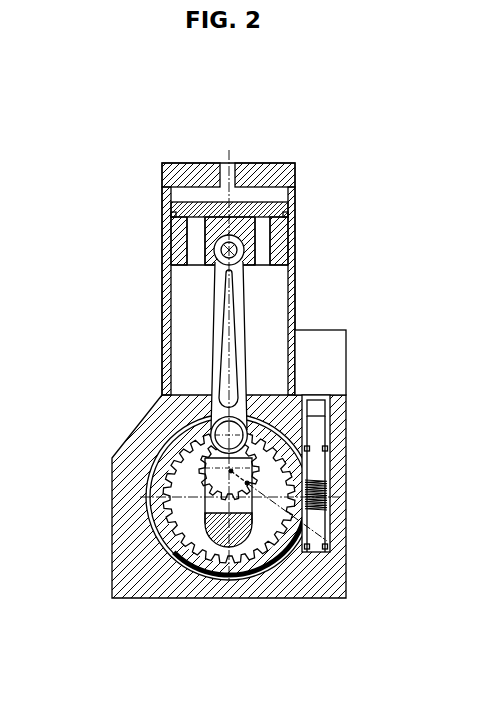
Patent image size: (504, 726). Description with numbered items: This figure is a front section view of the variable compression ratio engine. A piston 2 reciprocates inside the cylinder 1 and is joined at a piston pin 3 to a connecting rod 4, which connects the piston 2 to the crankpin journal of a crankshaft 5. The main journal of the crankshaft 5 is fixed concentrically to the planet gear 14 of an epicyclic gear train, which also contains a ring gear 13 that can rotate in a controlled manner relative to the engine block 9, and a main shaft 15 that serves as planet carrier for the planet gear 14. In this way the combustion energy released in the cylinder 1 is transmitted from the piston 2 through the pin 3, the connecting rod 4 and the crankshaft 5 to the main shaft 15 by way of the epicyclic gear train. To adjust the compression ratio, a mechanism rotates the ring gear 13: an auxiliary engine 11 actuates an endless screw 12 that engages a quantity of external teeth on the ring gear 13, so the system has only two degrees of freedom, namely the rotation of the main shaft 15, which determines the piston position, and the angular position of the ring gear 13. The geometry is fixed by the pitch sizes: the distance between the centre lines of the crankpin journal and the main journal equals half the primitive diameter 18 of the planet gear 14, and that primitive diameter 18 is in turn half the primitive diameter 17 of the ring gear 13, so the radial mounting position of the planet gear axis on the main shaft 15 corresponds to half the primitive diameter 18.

The cylinder 1 is at (296, 168).
The piston 2 is at (283, 207).
The piston pin 3 is at (229, 250).
The connecting rod 4 is at (245, 323).
The crankshaft 5 is at (326, 446).
The engine block 9 is at (150, 598).
The auxiliary engine 11 is at (320, 362).
The endless screw 12 is at (329, 489).
The ring gear 13 is at (158, 517).
The planet gear 14 is at (327, 541).
The main shaft 15 is at (240, 548).
The primitive diameter of the ring gear 17 is at (147, 492).
The primitive diameter of the planet gears 18 is at (197, 462).